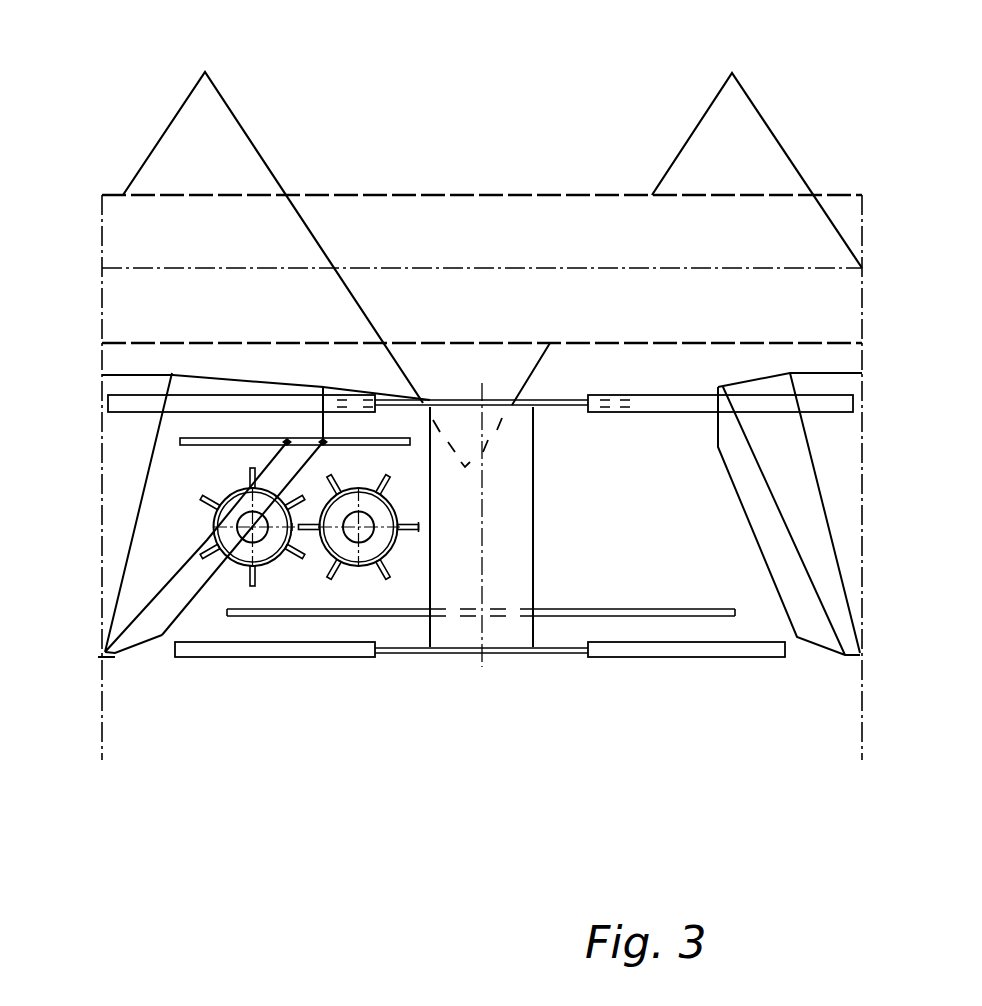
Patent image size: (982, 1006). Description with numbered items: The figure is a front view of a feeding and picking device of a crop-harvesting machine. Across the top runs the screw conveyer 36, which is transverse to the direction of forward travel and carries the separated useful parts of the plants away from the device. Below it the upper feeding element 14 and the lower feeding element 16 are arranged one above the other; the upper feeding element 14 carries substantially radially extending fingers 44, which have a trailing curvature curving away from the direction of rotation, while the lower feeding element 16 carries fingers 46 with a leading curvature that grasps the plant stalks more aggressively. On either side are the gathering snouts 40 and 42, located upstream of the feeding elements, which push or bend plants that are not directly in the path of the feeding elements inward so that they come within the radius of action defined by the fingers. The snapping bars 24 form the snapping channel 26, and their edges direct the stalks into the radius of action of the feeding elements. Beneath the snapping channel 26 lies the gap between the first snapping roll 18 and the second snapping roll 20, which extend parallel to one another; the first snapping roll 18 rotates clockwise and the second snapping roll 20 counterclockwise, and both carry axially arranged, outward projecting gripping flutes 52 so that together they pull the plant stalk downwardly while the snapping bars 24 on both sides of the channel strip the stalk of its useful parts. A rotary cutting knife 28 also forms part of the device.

The upper feeding element 14 is at (563, 428).
The lower feeding element 16 is at (516, 668).
The first snapping roll 18 is at (247, 548).
The second snapping roll 20 is at (368, 547).
The snapping bar 24 is at (192, 445).
The snapping channel 26 is at (308, 445).
The rotary cutting knife 28 is at (683, 613).
The screw conveyer 36 is at (364, 205).
The gathering snout 40 is at (122, 623).
The gathering snout 42 is at (828, 638).
The fingers 44 is at (677, 403).
The fingers 46 is at (740, 655).
The gripping flutes 52 is at (295, 547).